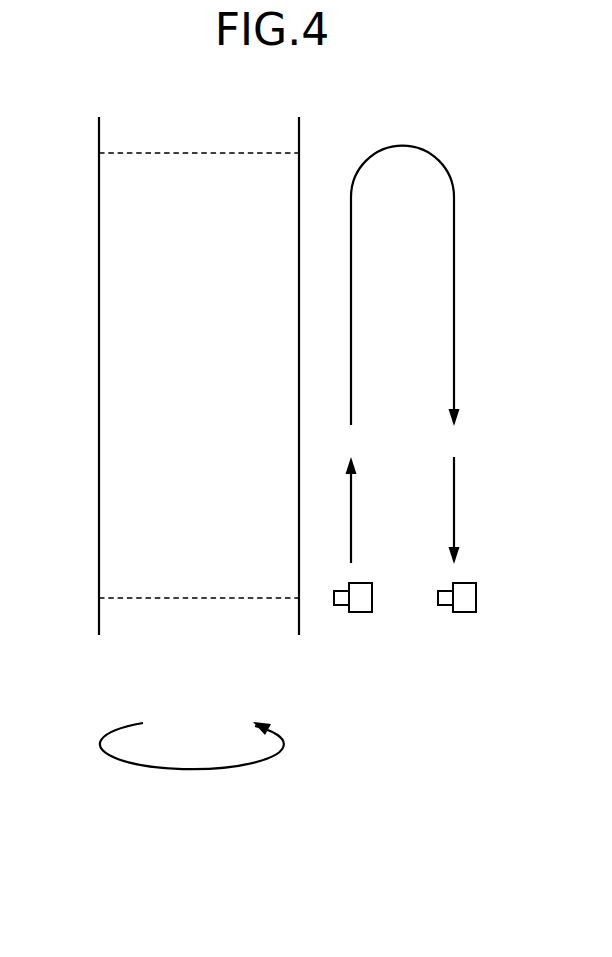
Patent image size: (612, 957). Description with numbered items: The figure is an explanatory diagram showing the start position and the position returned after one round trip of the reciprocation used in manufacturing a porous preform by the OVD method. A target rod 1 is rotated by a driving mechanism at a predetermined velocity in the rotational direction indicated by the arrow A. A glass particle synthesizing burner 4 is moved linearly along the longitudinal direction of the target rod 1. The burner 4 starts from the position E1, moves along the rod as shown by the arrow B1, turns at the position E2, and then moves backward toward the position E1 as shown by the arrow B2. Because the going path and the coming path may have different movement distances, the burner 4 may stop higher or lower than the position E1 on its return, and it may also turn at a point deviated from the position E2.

The target rod 1 is at (99, 208).
The glass particle synthesizing burner 4 is at (360, 612).
The position E1 is at (181, 598).
The position E2 is at (181, 153).
The arrow B1 is at (351, 511).
The arrow B2 is at (454, 511).
The arrow A is at (192, 762).